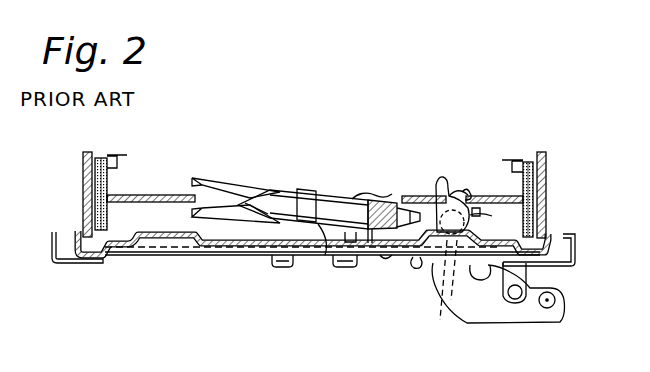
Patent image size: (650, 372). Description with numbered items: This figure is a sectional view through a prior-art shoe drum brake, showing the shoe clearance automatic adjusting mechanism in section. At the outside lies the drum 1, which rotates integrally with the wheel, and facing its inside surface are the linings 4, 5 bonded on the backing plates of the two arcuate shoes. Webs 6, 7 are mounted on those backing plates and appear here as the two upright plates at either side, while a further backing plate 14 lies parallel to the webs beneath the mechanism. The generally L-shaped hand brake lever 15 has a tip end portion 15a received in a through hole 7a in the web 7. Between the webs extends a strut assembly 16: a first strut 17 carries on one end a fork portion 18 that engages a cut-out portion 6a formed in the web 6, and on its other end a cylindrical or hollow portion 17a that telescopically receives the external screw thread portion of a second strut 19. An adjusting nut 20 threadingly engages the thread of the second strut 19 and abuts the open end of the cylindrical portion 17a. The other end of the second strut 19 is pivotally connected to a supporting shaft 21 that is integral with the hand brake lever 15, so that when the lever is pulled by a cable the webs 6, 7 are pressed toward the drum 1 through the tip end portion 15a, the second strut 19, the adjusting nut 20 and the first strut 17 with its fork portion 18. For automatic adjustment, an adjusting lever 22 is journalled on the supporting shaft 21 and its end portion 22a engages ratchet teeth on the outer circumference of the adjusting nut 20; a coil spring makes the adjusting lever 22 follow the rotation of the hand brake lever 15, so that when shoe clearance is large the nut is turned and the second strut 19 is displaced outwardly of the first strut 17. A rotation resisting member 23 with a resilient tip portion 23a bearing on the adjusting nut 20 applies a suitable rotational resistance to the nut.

The drum 1 is at (547, 160).
The lining 4 is at (86, 181).
The lining 5 is at (540, 205).
The web 6 is at (150, 194).
The cut-out portion 6a is at (188, 198).
The web 7 is at (530, 184).
The through hole 7a is at (490, 220).
The backing plate 14 is at (208, 252).
The hand brake lever 15 is at (493, 308).
The tip end portion 15a is at (448, 185).
The arm assembly 16 is at (301, 184).
The first strut 17 is at (268, 206).
The cylindrical portion 17a is at (327, 257).
The fork portion 18 is at (222, 178).
The second strut 19 is at (393, 255).
The adjusting nut 20 is at (434, 210).
The supporting shaft 21 is at (443, 291).
The adjusting lever 22 is at (421, 268).
The end portion 22a is at (376, 240).
The rotation resisting member 23 is at (360, 196).
The tip portion 23a is at (392, 192).